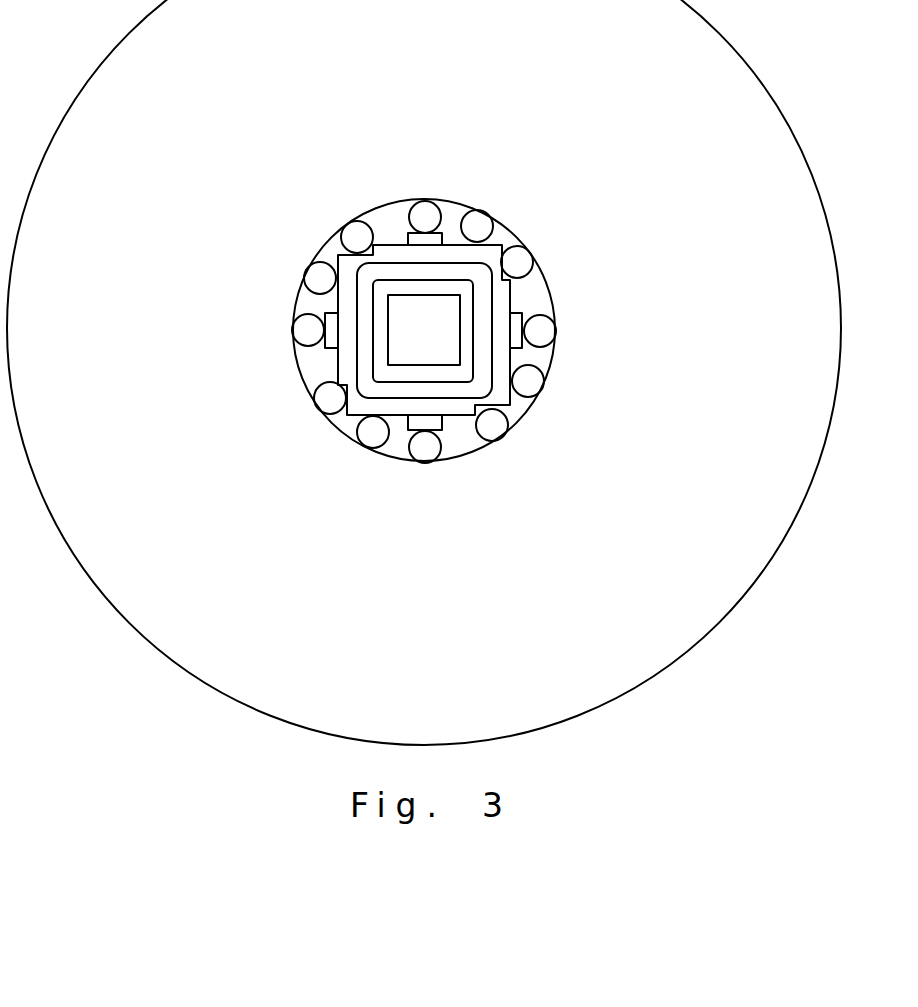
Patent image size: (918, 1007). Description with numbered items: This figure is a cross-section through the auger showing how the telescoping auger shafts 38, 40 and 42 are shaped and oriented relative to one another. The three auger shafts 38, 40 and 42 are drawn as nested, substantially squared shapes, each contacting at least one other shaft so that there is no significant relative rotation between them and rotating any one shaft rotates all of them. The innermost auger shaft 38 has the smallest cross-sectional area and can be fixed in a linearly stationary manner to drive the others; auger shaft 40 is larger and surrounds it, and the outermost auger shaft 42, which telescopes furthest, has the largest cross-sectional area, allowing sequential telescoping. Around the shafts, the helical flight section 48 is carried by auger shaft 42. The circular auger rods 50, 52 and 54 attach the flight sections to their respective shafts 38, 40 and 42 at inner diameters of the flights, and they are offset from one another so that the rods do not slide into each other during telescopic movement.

The auger shaft 38 is at (432, 330).
The auger shaft 40 is at (465, 290).
The auger shaft 42 is at (448, 270).
The flight section 48 is at (445, 59).
The auger rod 50 is at (320, 277).
The auger rod 52 is at (355, 235).
The auger rod 54 is at (423, 212).